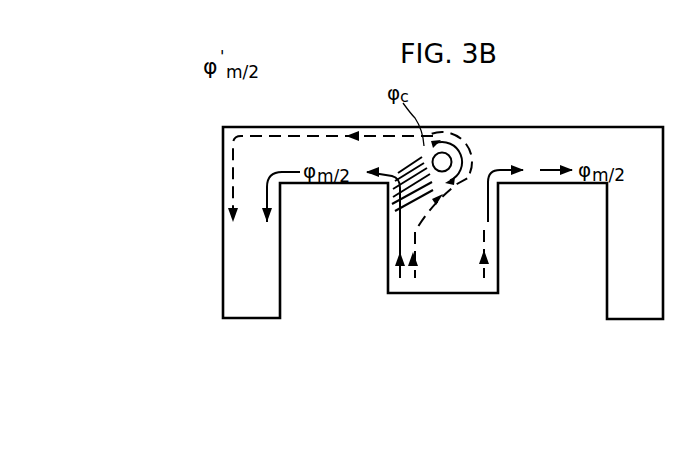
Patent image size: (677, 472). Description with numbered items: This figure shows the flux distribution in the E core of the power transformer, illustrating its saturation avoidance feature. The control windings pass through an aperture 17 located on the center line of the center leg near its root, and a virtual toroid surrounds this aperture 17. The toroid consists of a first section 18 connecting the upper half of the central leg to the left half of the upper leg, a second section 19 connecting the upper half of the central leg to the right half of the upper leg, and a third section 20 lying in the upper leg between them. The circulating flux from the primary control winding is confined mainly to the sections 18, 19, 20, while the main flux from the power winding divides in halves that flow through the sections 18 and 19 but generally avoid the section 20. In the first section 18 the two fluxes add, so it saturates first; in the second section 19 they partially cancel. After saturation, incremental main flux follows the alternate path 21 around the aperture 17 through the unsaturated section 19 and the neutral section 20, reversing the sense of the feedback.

The aperture 17 is at (462, 162).
The first section of the virtual toroid 18 is at (415, 165).
The second section of the virtual toroid 19 is at (496, 186).
The third section of the virtual toroid 20 is at (461, 140).
The alternate flux path 21 is at (233, 135).